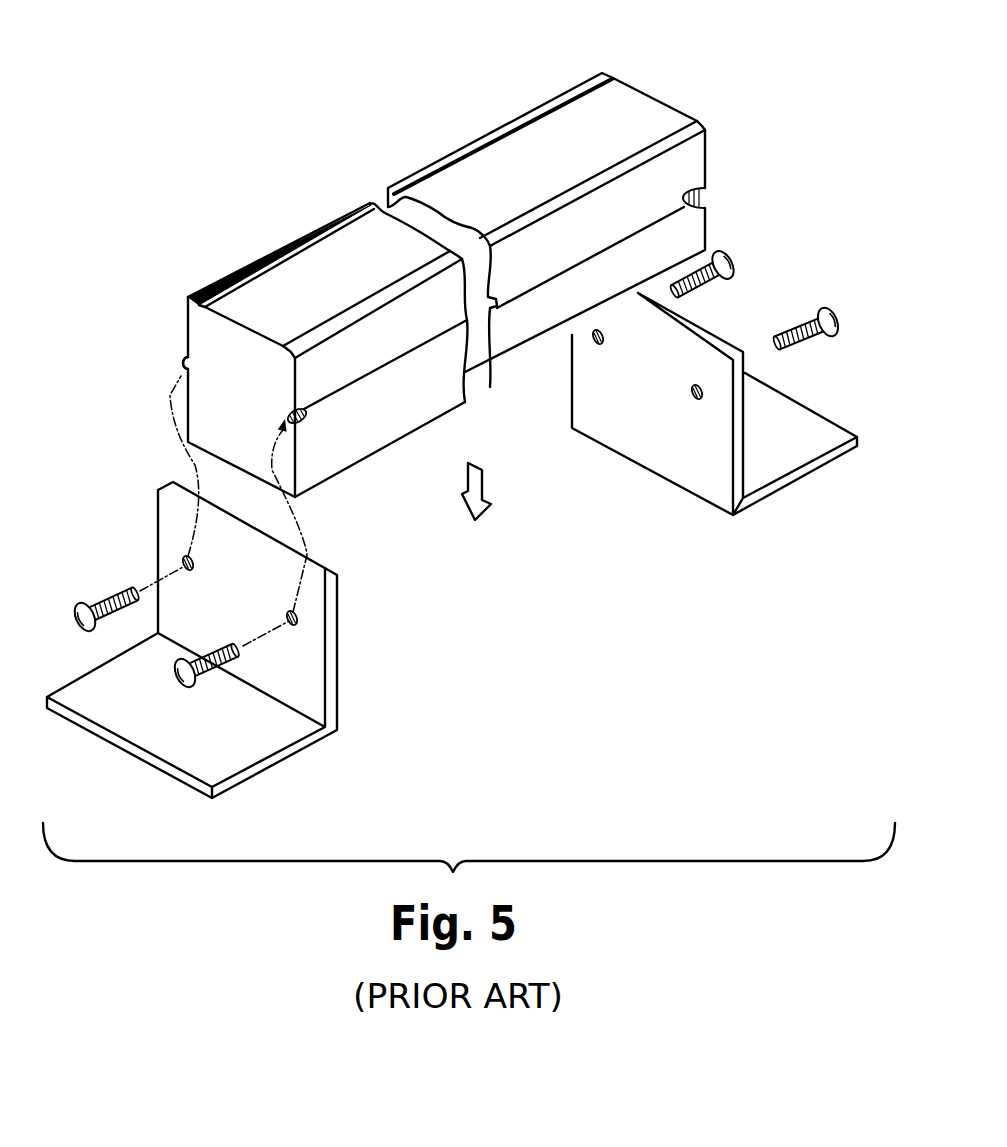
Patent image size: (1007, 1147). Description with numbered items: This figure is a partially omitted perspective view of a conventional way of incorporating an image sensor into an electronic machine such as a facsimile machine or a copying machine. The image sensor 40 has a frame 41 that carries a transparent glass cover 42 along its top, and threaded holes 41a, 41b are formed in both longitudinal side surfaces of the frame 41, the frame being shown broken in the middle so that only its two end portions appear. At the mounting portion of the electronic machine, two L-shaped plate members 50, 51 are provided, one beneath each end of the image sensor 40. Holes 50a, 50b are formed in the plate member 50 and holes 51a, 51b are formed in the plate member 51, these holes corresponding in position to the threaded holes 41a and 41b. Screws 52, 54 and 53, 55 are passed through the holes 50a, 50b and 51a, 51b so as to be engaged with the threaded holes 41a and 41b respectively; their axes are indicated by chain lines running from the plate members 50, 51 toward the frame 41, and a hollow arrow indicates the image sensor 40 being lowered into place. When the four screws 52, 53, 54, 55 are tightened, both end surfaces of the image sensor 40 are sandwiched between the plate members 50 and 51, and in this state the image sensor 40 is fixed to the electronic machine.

The image sensor 40 is at (432, 283).
The frame 41 is at (693, 173).
The transparent cover 42 is at (287, 340).
The threaded hole 41a is at (368, 380).
The threaded hole 41b is at (182, 374).
The L-shaped plate member 50 is at (248, 626).
The hole 50a is at (300, 616).
The hole 50b is at (184, 561).
The L-shaped plate member 51 is at (701, 453).
The hole 51a is at (697, 401).
The hole 51b is at (596, 345).
The screw 52 is at (180, 683).
The screw 53 is at (115, 593).
The screw 54 is at (823, 306).
The screw 55 is at (738, 260).